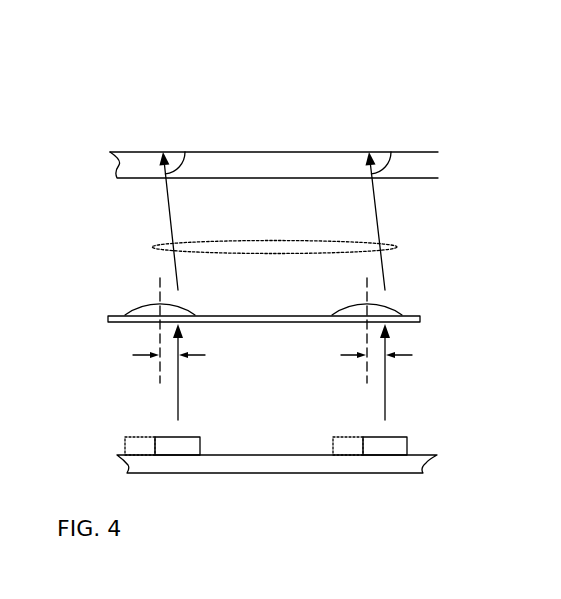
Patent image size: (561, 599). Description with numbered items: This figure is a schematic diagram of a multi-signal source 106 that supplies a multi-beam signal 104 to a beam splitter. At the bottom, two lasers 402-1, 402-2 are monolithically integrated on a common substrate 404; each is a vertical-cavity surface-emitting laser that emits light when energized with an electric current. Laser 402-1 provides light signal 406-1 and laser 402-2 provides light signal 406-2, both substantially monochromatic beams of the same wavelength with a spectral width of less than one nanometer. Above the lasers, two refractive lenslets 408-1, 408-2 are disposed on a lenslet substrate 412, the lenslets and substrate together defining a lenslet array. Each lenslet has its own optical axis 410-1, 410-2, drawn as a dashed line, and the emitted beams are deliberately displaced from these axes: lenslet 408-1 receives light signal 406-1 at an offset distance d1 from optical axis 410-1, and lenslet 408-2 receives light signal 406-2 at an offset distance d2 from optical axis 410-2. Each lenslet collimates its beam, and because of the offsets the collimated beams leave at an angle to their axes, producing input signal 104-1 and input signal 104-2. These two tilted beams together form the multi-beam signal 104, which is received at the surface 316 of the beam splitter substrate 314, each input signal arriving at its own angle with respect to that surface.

The multi-signal source 106 is at (99, 79).
The substrate 314 is at (251, 146).
The surface 316 is at (248, 152).
The input signal 104-1 is at (170, 235).
The input signal 104-2 is at (377, 235).
The multi-beam signal 104 is at (397, 247).
The lenslet 408-1 is at (133, 308).
The lenslet 408-2 is at (340, 308).
The lenslet substrate 412 is at (420, 316).
The optical axis 410-1 is at (158, 372).
The optical axis 410-2 is at (365, 372).
The light signal 406-1 is at (181, 400).
The light signal 406-2 is at (388, 400).
The offset distance d1 is at (157, 355).
The offset distance d2 is at (365, 355).
The laser 402-1 is at (200, 446).
The laser 402-2 is at (408, 446).
The substrate 404 is at (437, 460).